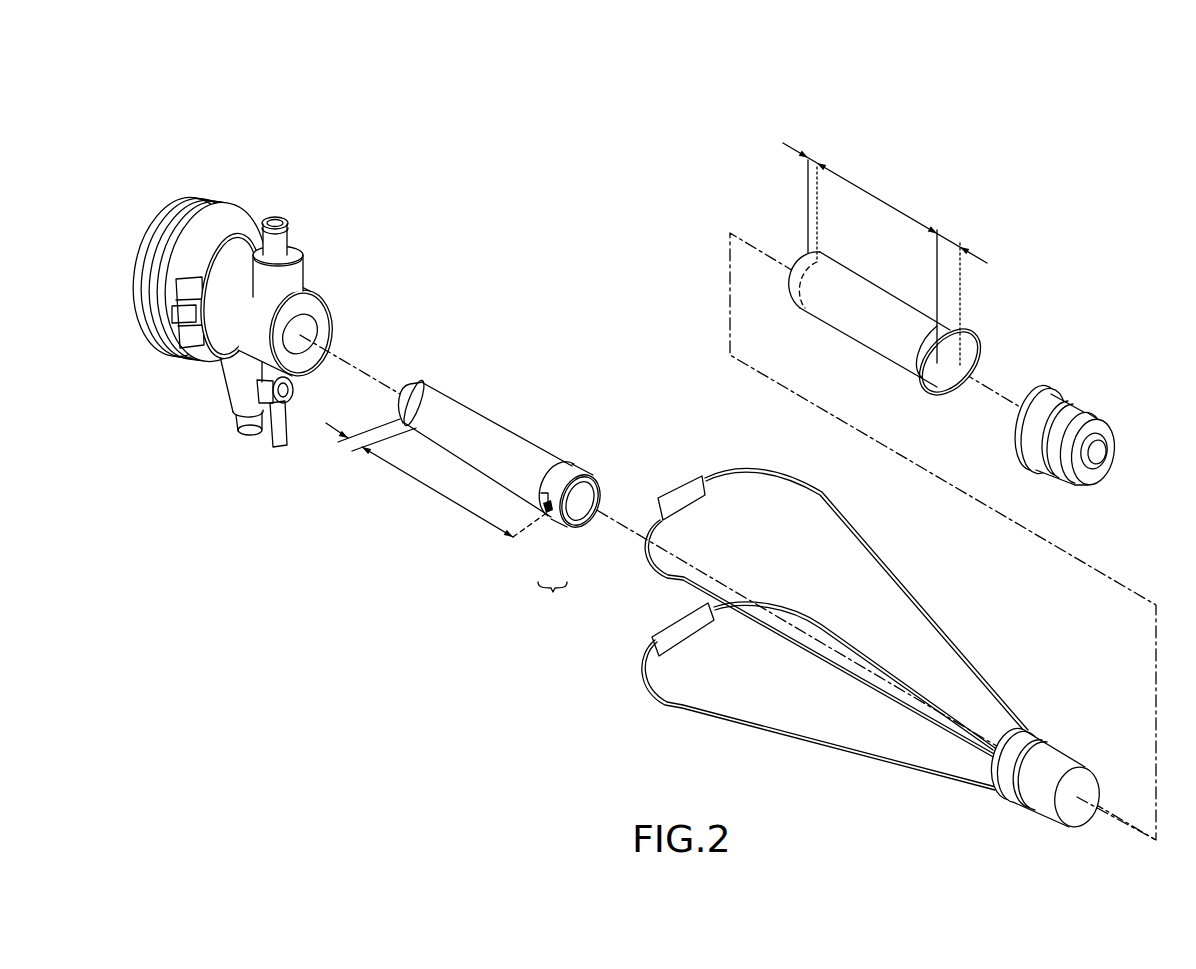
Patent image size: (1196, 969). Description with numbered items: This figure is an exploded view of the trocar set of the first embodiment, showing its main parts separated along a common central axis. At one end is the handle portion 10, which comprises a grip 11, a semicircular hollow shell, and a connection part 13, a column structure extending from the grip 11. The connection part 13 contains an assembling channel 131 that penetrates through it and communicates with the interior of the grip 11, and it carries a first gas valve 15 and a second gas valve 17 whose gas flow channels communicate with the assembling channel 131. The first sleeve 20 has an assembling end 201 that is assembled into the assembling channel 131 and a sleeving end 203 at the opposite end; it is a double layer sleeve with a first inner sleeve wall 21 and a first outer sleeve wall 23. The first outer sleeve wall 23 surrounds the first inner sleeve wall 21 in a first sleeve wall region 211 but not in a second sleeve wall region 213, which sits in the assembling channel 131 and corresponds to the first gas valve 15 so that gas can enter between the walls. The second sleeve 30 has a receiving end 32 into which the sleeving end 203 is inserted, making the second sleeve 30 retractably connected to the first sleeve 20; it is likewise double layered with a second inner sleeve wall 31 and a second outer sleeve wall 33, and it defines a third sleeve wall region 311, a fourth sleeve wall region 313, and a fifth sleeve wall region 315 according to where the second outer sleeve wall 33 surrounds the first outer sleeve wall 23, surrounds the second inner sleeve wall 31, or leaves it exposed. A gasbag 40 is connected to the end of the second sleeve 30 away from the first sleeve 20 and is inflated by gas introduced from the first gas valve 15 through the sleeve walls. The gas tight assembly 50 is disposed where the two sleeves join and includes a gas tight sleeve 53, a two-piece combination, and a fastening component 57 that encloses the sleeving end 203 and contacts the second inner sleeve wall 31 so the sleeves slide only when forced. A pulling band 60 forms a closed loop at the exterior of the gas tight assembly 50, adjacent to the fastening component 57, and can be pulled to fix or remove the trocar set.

The handle portion 10 is at (259, 275).
The grip 11 is at (223, 204).
The connection part 13 is at (294, 305).
The assembling channel 131 is at (312, 330).
The first gas valve 15 is at (299, 251).
The second gas valve 17 is at (220, 374).
The first sleeve 20 is at (478, 411).
The first inner sleeve wall 21 is at (434, 352).
The assembling end 201 is at (423, 380).
The first outer sleeve wall 23 is at (493, 422).
The sleeving end 203 is at (607, 486).
The first sleeve wall region 211 is at (437, 494).
The second sleeve wall region 213 is at (352, 452).
The second sleeve 30 is at (889, 256).
The second inner sleeve wall 31 is at (932, 346).
The third sleeve wall region 311 is at (812, 156).
The fourth sleeve wall region 313 is at (875, 197).
The fifth sleeve wall region 315 is at (955, 276).
The receiving end 32 is at (790, 262).
The second outer sleeve wall 33 is at (863, 286).
The gasbag 40 is at (1084, 431).
The gas tight assembly 50 is at (838, 665).
The gas tight sleeve 53 is at (1078, 762).
The fastening component 57 is at (559, 515).
The pulling band 60 is at (835, 586).